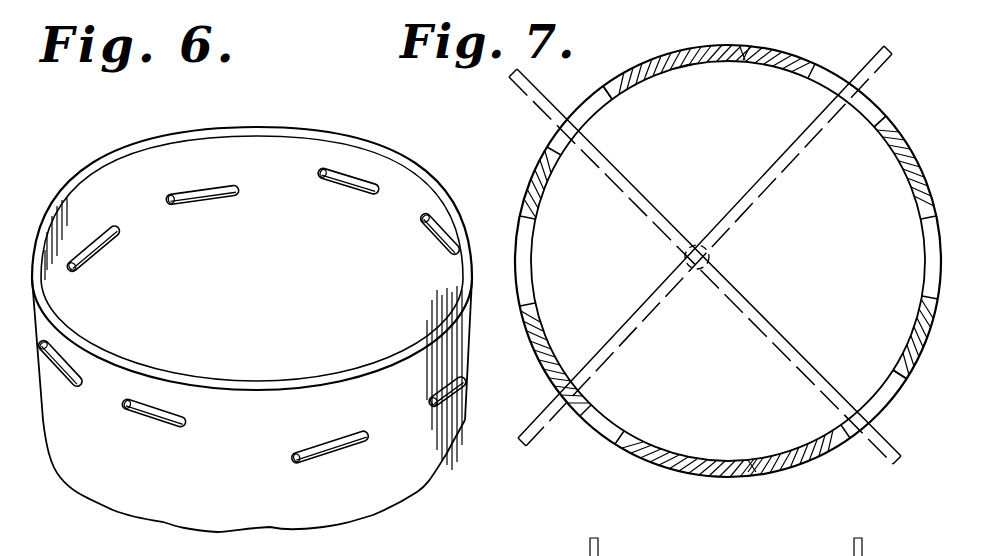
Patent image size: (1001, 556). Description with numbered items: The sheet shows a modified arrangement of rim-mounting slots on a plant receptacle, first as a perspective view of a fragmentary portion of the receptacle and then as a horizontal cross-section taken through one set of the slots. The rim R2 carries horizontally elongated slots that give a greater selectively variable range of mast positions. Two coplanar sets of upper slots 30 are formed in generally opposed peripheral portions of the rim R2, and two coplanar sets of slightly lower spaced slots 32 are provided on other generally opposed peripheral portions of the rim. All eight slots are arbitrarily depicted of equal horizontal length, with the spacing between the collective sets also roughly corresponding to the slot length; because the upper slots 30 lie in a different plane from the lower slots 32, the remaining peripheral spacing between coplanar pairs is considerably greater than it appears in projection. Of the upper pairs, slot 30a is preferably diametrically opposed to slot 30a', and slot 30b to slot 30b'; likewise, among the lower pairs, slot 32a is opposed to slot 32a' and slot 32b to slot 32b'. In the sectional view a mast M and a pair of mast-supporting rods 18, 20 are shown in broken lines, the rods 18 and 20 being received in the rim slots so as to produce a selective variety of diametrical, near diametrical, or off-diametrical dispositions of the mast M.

In FIG. 6, the rim R2 is at (305, 128).
In FIG. 7, the mast-supporting rod 18 is at (784, 337).
In FIG. 7, the mast-supporting rod 20 is at (787, 170).
In FIG. 7, the mast M is at (697, 243).
In FIG. 6, the upper slots 30 is at (153, 405).
In FIG. 7, the upper slots 30 is at (849, 80).
In FIG. 6, the upper slot 30a is at (143, 438).
In FIG. 7, the upper slot 30a is at (753, 443).
In FIG. 6, the upper slot 30b is at (73, 392).
In FIG. 7, the upper slot 30b is at (645, 410).
In FIG. 6, the upper slot 30a' is at (341, 206).
In FIG. 7, the upper slot 30a' is at (757, 82).
In FIG. 6, the upper slot 30b' is at (415, 242).
In FIG. 7, the upper slot 30b' is at (847, 145).
In FIG. 6, the lower slots 32 is at (88, 225).
In FIG. 7, the lower slots 32 is at (557, 135).
In FIG. 6, the lower slot 32a is at (119, 256).
In FIG. 7, the lower slot 32a is at (569, 253).
In FIG. 6, the lower slot 32b is at (217, 222).
In FIG. 7, the lower slot 32b is at (650, 107).
In FIG. 6, the lower slot 32a' is at (425, 380).
In FIG. 7, the lower slot 32a' is at (895, 257).
In FIG. 6, the lower slot 32b' is at (329, 431).
In FIG. 7, the lower slot 32b' is at (867, 365).